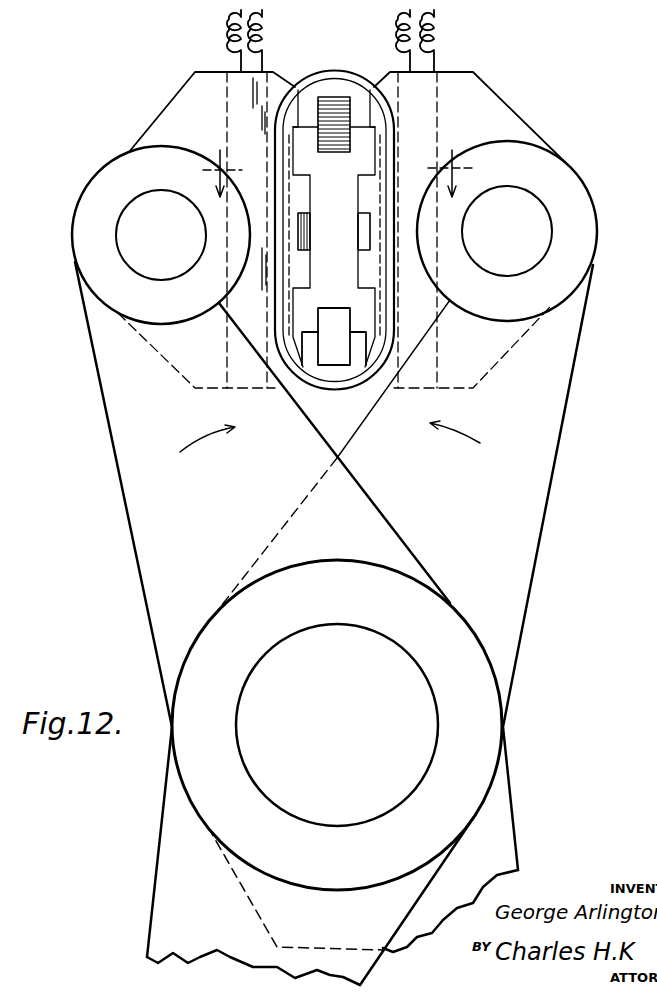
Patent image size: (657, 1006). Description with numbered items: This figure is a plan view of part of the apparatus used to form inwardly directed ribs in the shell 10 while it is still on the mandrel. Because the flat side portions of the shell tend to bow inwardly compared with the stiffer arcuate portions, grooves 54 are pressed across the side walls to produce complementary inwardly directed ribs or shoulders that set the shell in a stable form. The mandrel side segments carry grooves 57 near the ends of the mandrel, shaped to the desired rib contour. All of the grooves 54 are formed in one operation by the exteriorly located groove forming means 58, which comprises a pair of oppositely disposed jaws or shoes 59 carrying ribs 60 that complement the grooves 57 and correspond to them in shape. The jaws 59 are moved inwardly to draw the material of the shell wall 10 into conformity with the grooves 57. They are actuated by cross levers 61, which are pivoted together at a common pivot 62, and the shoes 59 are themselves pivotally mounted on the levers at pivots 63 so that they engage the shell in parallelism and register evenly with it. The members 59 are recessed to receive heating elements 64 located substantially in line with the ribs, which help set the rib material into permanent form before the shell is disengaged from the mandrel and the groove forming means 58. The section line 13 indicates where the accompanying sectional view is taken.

The shell 10 is at (359, 213).
The section line 13- 13 is at (338, 173).
The grooves 54 is at (288, 284).
The grooves of the mandrel segments 57 is at (440, 298).
The groove forming means 58 is at (567, 163).
The jaws or shoes 59 is at (170, 107).
The ribs 60 is at (291, 89).
The cross levers 61 is at (150, 573).
The pivot 62 is at (403, 693).
The pivotal mounting 63 is at (132, 240).
The heating elements 64 is at (433, 97).